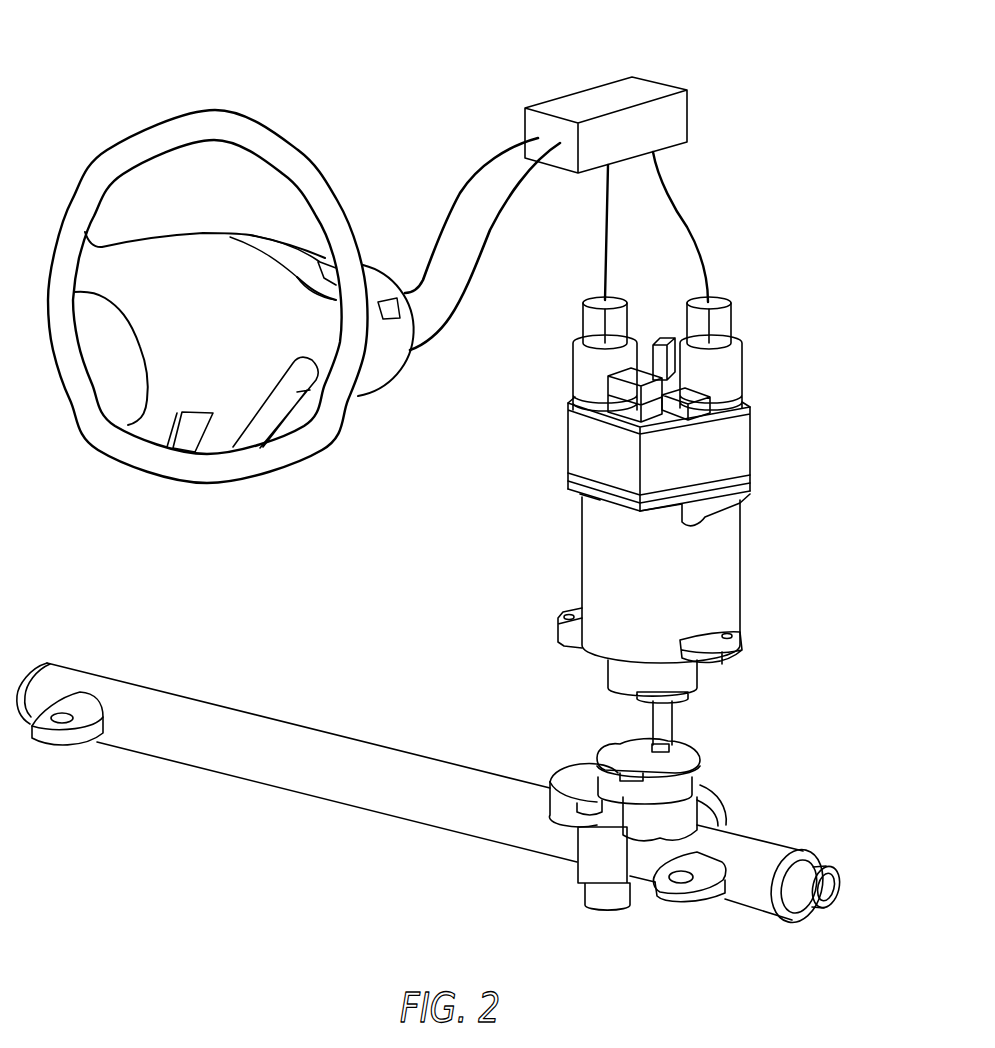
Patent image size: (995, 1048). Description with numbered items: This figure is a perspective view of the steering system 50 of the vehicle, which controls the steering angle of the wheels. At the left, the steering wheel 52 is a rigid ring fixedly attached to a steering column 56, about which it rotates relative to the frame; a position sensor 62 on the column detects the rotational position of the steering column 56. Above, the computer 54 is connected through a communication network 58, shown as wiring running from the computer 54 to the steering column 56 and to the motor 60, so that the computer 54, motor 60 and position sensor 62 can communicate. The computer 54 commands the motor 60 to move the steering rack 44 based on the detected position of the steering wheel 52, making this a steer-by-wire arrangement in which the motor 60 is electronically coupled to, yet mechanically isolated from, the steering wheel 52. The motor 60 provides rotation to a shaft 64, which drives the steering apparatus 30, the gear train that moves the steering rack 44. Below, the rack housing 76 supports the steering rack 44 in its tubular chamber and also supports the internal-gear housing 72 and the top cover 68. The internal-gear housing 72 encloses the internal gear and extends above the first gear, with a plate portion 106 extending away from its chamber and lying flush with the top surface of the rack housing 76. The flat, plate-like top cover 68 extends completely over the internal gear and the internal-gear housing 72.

The steering apparatus 30 is at (770, 734).
The steering rack 44 is at (823, 872).
The steering system 50 is at (765, 75).
The steering wheel 52 is at (117, 143).
The computer 54 is at (565, 95).
The steering column 56 is at (355, 398).
The communication network 58 is at (510, 202).
The motor 60 is at (741, 566).
The position sensor 62 is at (390, 321).
The shaft 64 is at (674, 726).
The top cover 68 is at (611, 743).
The internal-gear housing 72 is at (694, 781).
The rack housing 76 is at (222, 705).
The plate portion 106 is at (560, 765).